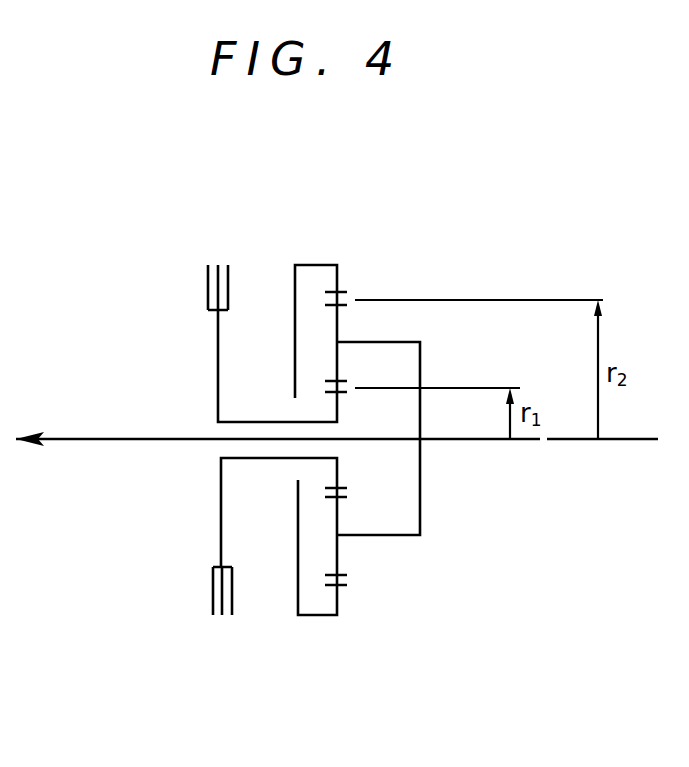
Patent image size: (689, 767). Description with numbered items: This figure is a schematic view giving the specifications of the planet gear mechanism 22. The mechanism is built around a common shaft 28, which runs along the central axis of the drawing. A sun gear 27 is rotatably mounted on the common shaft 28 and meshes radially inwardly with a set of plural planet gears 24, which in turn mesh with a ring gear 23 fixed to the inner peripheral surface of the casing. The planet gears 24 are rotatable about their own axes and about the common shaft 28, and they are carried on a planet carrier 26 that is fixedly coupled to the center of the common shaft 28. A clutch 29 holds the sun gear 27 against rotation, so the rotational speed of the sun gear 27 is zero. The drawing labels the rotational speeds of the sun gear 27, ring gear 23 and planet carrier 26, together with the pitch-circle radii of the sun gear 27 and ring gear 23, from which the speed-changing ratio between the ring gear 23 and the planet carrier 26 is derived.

The planet gear mechanism 22 is at (336, 642).
The ring gear 23 is at (338, 595).
The planet gears 24 is at (336, 317).
The planet carrier 26 is at (422, 517).
The sun gear 27 is at (337, 473).
The common shaft 28 is at (387, 437).
The clutch 29 is at (207, 278).